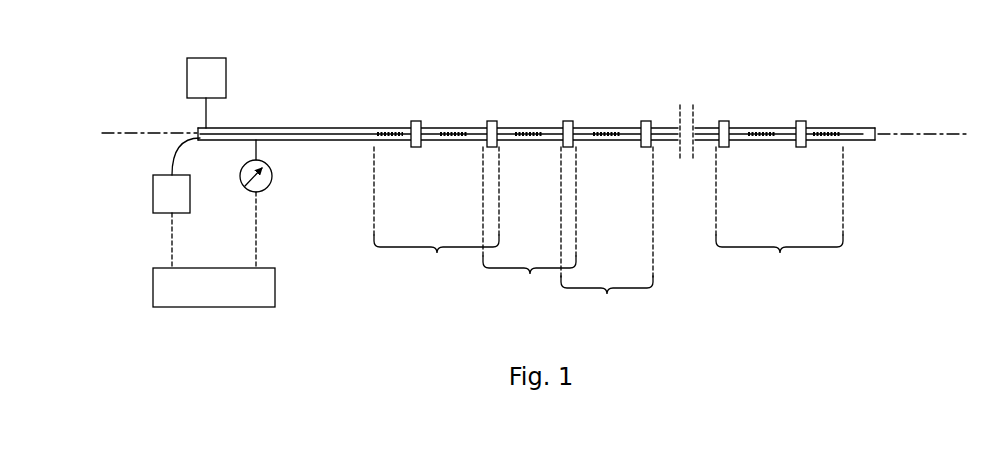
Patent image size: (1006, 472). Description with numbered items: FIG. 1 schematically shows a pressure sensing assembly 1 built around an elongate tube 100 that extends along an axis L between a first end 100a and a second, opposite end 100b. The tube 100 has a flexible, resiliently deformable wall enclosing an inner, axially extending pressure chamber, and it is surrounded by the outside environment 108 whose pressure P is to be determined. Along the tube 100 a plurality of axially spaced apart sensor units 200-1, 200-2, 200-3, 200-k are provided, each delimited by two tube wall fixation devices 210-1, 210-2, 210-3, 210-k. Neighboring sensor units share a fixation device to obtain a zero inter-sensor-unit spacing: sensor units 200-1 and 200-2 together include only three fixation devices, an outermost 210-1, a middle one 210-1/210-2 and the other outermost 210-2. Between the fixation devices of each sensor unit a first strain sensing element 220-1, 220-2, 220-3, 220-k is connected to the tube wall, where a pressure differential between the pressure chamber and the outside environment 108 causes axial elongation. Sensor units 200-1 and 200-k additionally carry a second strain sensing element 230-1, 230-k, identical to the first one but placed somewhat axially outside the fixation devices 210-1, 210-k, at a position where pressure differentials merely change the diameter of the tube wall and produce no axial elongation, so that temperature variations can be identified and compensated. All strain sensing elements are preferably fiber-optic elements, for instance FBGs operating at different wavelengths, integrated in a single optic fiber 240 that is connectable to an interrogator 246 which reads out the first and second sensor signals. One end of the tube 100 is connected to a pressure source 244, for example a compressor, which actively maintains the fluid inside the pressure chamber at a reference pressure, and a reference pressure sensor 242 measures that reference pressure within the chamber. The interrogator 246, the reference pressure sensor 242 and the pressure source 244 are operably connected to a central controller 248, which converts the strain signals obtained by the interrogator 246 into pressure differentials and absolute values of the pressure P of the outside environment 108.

The pressure sensing assembly 1 is at (176, 103).
The outside environment 108 is at (281, 51).
The elongate tube 100 is at (305, 128).
The first end of the tube 100a is at (198, 130).
The second end of the tube 100b is at (877, 129).
The axis L is at (534, 134).
The pressure of the outside environment P is at (281, 168).
The optic fiber 240 is at (174, 160).
The reference pressure sensor 242 is at (270, 182).
The pressure source 244 is at (219, 86).
The interrogator 246 is at (184, 202).
The central controller 248 is at (227, 295).
The tube wall fixation device 210-1 is at (416, 121).
The tube wall fixation device 210-2 is at (492, 121).
The tube wall fixation device 210-3 is at (568, 121).
The tube wall fixation device 210-k is at (723, 121).
The first strain sensing element 220-1 is at (453, 141).
The first strain sensing element 220-2 is at (529, 141).
The first strain sensing element 220-3 is at (607, 141).
The first strain sensing element 220-k is at (762, 141).
The second strain sensing element 230-1 is at (390, 131).
The second strain sensing element 230-k is at (826, 131).
The sensor unit 200-1 is at (436, 209).
The sensor unit 200-2 is at (529, 220).
The sensor unit 200-3 is at (607, 229).
The sensor unit 200-k is at (779, 209).